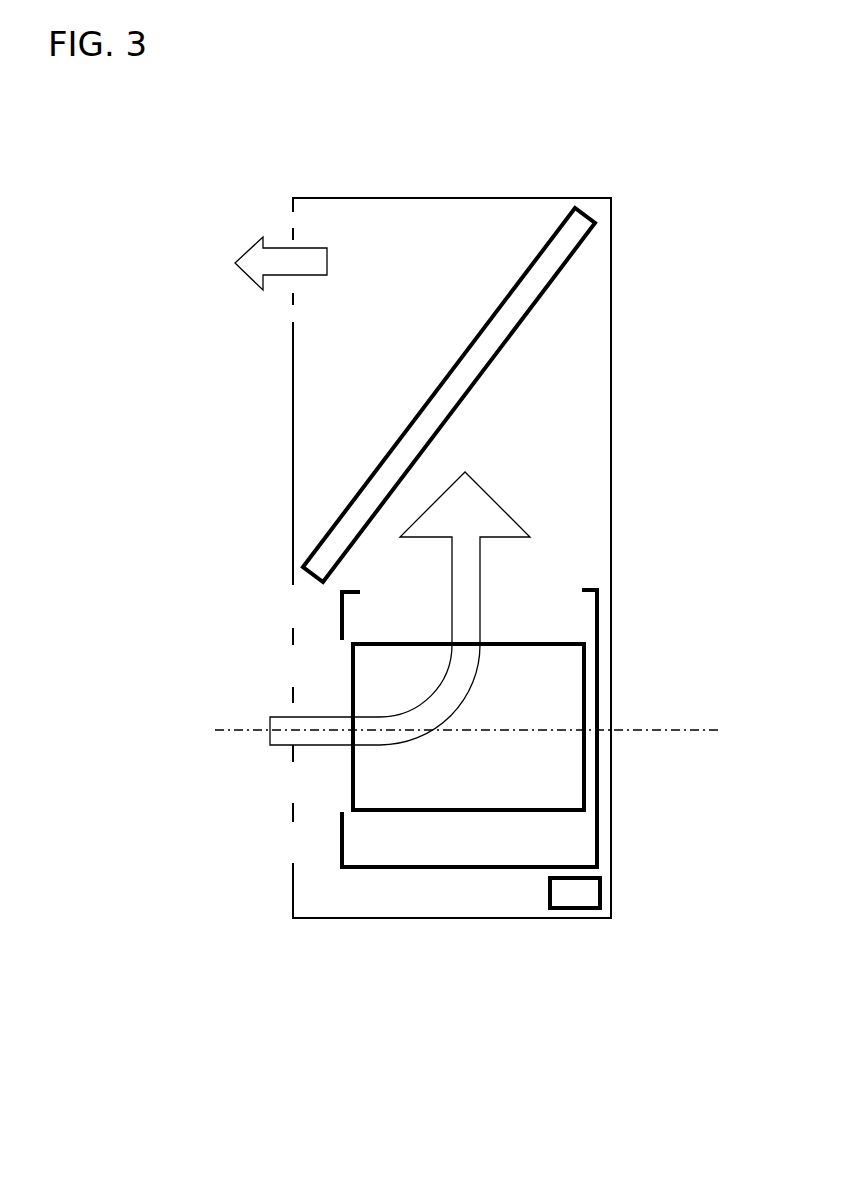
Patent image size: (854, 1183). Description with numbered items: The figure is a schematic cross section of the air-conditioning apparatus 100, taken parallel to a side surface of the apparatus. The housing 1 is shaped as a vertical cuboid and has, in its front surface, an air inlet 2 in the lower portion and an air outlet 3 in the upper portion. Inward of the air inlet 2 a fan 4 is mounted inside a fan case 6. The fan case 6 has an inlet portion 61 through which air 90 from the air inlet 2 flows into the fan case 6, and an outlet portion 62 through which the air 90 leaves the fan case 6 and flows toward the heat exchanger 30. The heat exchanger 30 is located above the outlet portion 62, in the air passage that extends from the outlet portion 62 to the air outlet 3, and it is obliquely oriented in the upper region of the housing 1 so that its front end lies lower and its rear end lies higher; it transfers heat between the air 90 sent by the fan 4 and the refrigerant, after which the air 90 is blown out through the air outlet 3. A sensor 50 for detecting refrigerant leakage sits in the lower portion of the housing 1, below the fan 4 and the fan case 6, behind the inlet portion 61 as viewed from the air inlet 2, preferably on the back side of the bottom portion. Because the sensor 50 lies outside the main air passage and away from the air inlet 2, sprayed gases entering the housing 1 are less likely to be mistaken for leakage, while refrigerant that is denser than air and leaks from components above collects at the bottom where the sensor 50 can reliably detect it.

The air-conditioning apparatus 100 is at (428, 192).
The housing 1 is at (612, 367).
The air inlet 2 is at (293, 668).
The air outlet 3 is at (290, 228).
The heat exchanger 30 is at (578, 225).
The air 90 is at (460, 562).
The fan 4 is at (560, 707).
The fan case 6 is at (597, 617).
The outlet portion 62 is at (550, 593).
The inlet portion 61 is at (337, 775).
The sensor 50 is at (577, 897).